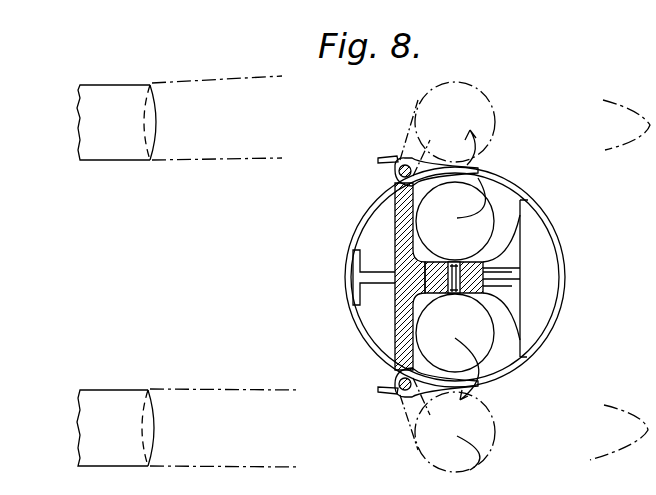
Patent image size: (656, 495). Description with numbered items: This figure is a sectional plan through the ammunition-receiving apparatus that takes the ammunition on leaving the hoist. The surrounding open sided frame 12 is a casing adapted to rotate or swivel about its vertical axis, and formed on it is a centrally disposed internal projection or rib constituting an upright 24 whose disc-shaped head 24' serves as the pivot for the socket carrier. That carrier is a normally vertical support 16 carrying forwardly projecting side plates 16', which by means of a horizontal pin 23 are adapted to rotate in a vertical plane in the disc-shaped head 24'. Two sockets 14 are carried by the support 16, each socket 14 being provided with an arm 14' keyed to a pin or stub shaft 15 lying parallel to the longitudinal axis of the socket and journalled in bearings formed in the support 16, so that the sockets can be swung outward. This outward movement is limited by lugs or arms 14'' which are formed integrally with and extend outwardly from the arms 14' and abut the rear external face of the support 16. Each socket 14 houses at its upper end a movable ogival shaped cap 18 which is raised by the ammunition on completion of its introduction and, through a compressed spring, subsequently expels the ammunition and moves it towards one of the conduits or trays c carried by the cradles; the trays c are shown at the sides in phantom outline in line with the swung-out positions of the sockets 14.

The frame 12 is at (565, 274).
The socket 14 is at (344, 274).
The arm 14' is at (428, 275).
The lug 14'' is at (364, 263).
The pin 15 is at (398, 172).
The support 16 is at (377, 276).
The side plates 16' is at (514, 265).
The cap 18 is at (615, 146).
The horizontal pin 23 is at (455, 262).
The upright 24 is at (454, 278).
The disc-shaped head 24' is at (454, 293).
The conduit c is at (124, 150).